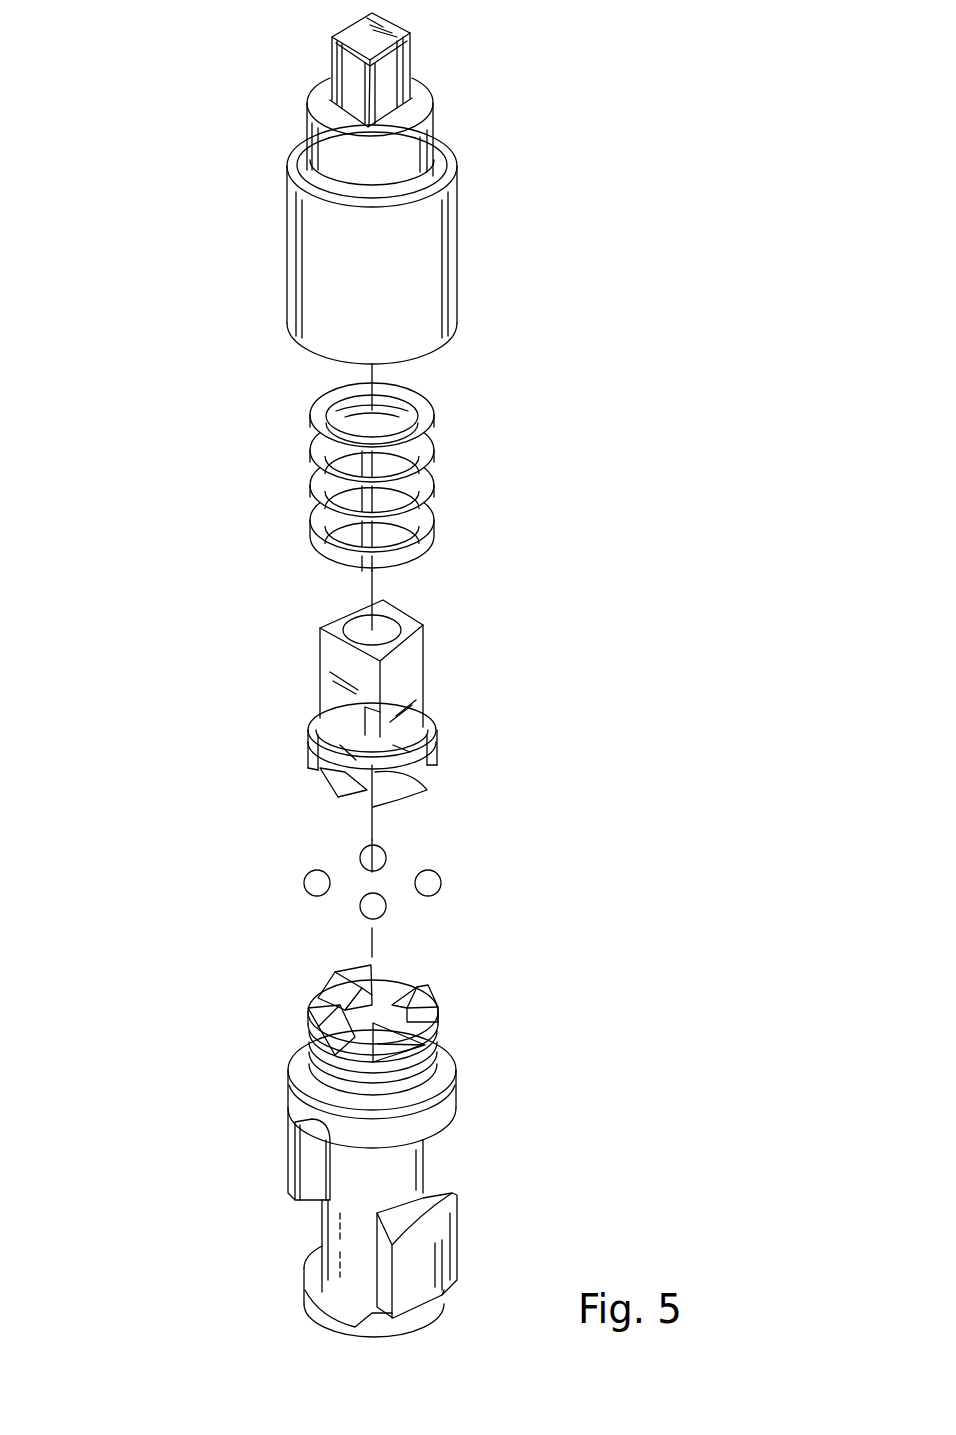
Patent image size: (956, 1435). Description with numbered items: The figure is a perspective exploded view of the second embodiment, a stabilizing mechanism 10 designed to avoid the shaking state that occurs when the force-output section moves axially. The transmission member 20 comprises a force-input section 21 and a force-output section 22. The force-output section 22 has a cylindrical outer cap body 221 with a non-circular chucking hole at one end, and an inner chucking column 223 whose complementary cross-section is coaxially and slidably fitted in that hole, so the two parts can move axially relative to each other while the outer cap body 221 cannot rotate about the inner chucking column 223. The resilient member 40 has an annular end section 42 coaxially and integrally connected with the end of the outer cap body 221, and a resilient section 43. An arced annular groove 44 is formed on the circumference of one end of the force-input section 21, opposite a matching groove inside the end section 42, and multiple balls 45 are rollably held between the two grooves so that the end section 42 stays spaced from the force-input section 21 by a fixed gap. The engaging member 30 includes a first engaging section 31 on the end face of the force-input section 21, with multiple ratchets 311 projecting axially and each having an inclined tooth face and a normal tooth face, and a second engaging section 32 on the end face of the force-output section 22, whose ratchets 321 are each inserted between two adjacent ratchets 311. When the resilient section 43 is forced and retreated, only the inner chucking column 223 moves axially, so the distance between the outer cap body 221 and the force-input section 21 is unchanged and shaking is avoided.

The stabilizing mechanism 10 is at (104, 1250).
The transmission member 20 is at (509, 1157).
The force-input section 21 is at (337, 1227).
The force-output section 22 is at (289, 75).
The outer cap body 221 is at (427, 102).
The inner chucking column 223 is at (423, 668).
The engaging member 30 is at (298, 803).
The first engaging section 31 is at (308, 973).
The ratchets 311 is at (427, 998).
The second engaging section 32 is at (459, 770).
The ratchets 321 is at (405, 790).
The resilient member 40 is at (268, 446).
The annular end section 42 is at (442, 298).
The resilient section 43 is at (433, 467).
The arced annular groove 44 is at (325, 1078).
The balls 45 is at (440, 882).